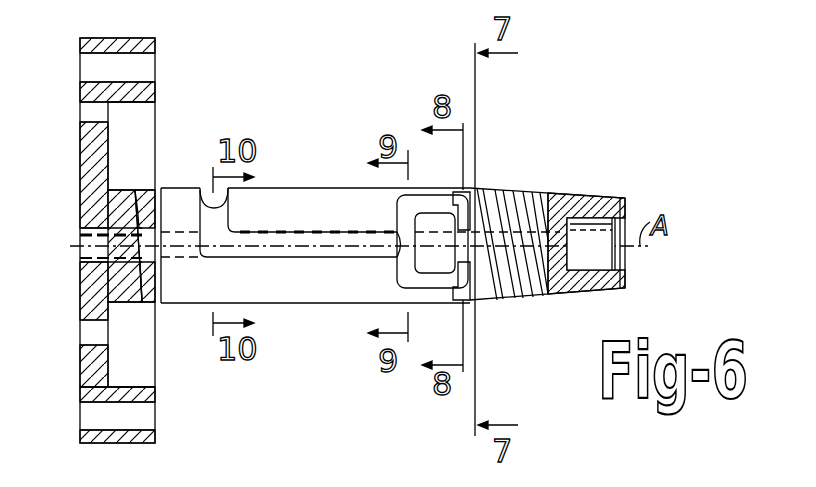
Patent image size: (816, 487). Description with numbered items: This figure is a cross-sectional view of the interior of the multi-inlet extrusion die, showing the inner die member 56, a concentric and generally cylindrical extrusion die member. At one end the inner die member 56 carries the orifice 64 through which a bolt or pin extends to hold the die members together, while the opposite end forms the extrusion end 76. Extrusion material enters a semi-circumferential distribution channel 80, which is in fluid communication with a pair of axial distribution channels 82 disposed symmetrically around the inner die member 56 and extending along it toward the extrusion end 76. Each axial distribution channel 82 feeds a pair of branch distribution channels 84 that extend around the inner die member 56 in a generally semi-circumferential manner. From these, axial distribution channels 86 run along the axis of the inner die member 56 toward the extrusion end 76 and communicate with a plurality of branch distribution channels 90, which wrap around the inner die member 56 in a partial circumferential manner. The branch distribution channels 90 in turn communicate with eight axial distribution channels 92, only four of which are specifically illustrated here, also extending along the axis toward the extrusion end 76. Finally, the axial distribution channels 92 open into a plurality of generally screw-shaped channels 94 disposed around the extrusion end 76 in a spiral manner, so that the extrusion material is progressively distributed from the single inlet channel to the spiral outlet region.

The orifice 64 is at (87, 118).
The inner die member 56 is at (296, 298).
The semi-circumferential distribution channel 80 is at (193, 209).
The axial distribution channels 82 is at (275, 230).
The branch distribution channels 84 is at (397, 214).
The axial distribution channels 86 is at (440, 287).
The extrusion end 76 is at (548, 196).
The axial distribution channels 92 is at (469, 184).
The branch distribution channels 90 is at (495, 202).
The screw-shaped channels 94 is at (505, 232).